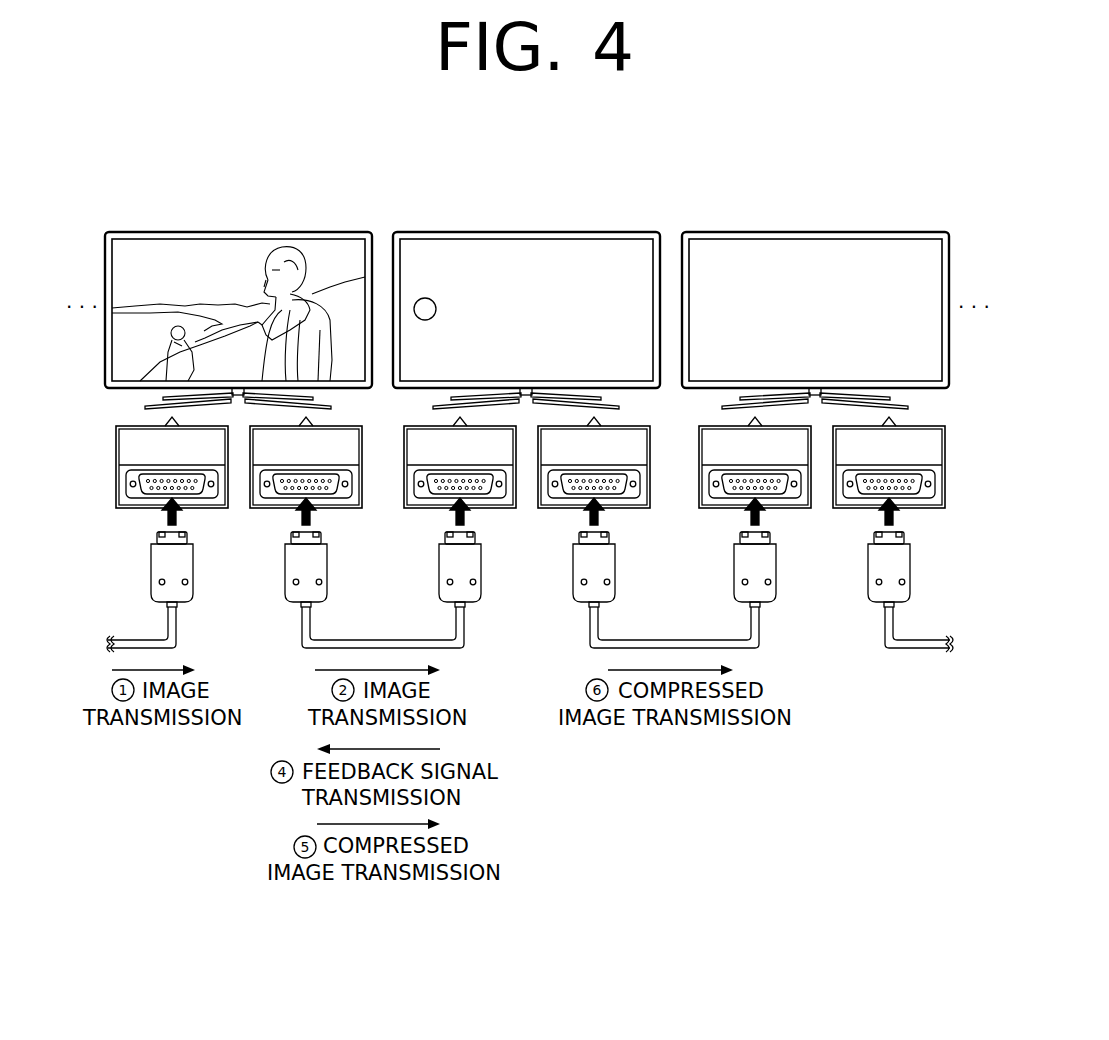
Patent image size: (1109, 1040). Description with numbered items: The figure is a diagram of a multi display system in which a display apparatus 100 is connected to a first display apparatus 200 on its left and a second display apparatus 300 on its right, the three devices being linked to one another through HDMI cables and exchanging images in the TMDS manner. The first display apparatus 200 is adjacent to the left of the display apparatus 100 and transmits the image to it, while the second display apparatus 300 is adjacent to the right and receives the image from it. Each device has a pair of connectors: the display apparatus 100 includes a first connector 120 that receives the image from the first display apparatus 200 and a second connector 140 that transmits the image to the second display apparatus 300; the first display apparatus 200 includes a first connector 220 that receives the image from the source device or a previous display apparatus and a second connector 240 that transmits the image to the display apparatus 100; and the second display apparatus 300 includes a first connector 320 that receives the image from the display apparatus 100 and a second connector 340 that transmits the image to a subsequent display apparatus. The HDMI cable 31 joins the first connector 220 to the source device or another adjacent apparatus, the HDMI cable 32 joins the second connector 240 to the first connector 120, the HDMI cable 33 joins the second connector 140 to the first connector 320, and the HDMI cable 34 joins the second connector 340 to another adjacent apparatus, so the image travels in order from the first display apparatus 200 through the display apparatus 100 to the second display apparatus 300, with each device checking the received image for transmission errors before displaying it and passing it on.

The display apparatus 100 is at (525, 232).
The first display apparatus 200 is at (235, 232).
The second display apparatus 300 is at (812, 232).
The first connector 120 is at (502, 485).
The second connector 140 is at (636, 485).
The first connector 220 is at (214, 485).
The second connector 240 is at (348, 485).
The first connector 320 is at (797, 485).
The second connector 340 is at (931, 485).
The HDMI cable 31 is at (140, 640).
The HDMI cable 32 is at (383, 640).
The HDMI cable 33 is at (674, 640).
The HDMI cable 34 is at (915, 640).